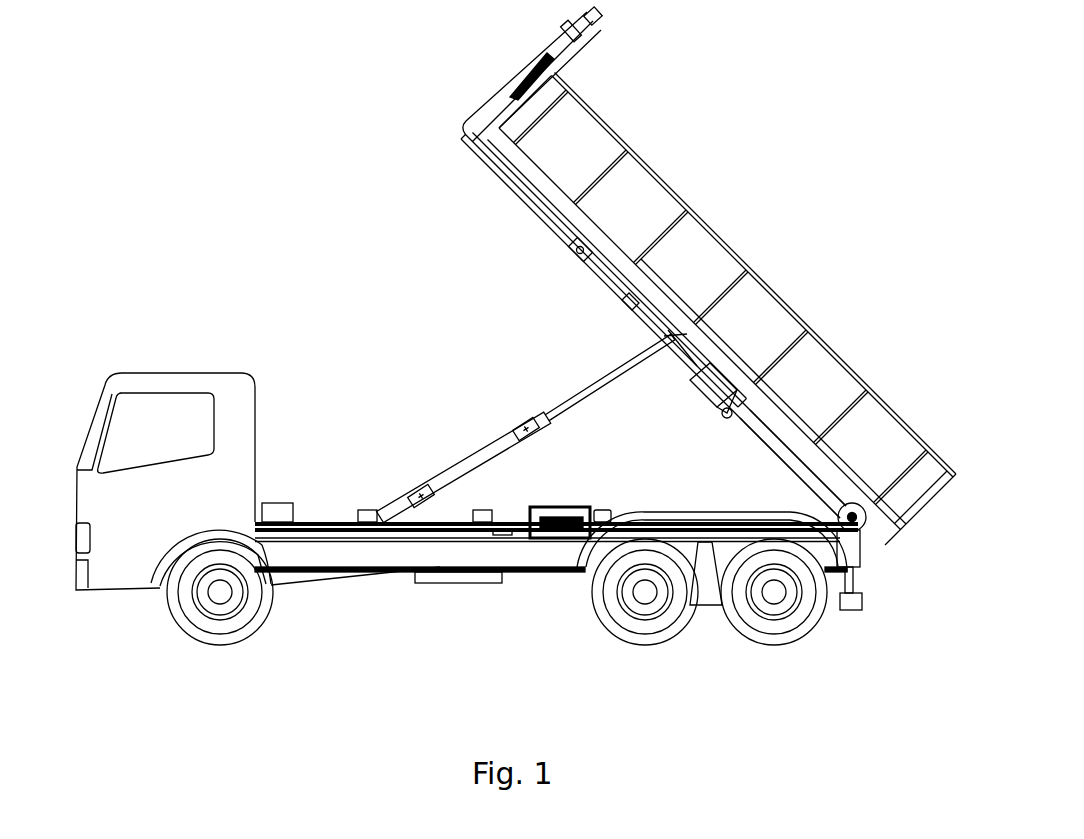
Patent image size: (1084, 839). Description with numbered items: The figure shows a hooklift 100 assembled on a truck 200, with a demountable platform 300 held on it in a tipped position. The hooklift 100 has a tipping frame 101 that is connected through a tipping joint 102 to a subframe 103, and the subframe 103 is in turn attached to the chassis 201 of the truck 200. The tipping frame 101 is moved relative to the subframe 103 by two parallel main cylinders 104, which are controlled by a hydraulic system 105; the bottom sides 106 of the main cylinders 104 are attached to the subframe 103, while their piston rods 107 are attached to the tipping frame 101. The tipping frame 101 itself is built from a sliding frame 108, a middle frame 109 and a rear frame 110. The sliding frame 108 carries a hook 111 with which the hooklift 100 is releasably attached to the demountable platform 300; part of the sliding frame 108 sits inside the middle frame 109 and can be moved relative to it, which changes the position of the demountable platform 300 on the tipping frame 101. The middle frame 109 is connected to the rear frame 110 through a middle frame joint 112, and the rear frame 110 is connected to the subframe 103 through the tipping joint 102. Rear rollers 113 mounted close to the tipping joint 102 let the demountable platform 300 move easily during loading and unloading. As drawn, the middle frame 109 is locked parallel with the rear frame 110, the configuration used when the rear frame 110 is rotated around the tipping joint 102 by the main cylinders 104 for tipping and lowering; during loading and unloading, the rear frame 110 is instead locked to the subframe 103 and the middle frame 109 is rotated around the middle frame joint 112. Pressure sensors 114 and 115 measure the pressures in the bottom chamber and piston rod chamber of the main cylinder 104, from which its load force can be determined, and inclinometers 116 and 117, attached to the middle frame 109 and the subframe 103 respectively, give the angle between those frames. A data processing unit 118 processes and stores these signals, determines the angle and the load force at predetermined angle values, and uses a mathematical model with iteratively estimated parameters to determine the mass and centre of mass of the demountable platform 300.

The hooklift 100 is at (306, 234).
The tipping frame 101 is at (476, 170).
The tipping joint 102 is at (862, 541).
The subframe 103 is at (432, 536).
The main cylinders 104 is at (462, 447).
The hydraulic system 105 is at (559, 540).
The bottom sides 106 is at (372, 510).
The piston rods 107 is at (608, 367).
The sliding frame 108 is at (470, 122).
The middle frame 109 is at (570, 250).
The rear frame 110 is at (773, 441).
The hook 111 is at (598, 13).
The middle frame joint 112 is at (725, 417).
The rear rollers 113 is at (862, 528).
The pressure sensor 114 is at (415, 500).
The pressure sensor 115 is at (520, 428).
The inclinometer 116 is at (622, 301).
The inclinometer 117 is at (501, 542).
The data processing unit 118 is at (276, 512).
The truck 200 is at (297, 628).
The chassis 201 is at (372, 552).
The demountable platform 300 is at (745, 232).